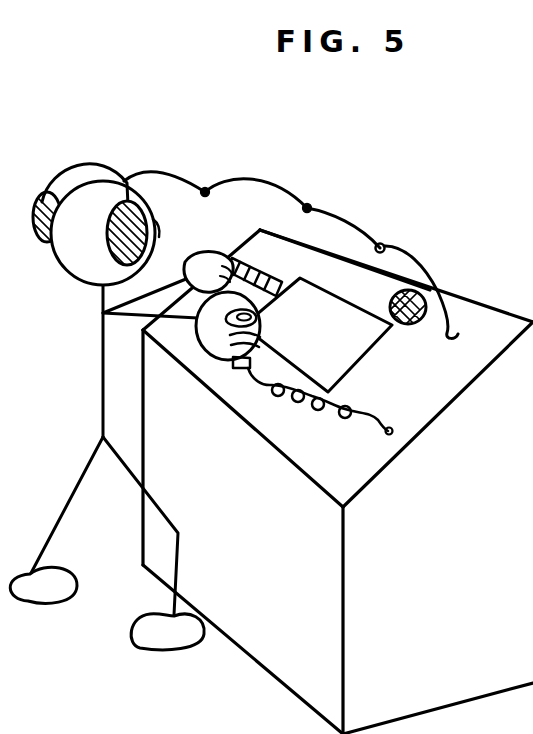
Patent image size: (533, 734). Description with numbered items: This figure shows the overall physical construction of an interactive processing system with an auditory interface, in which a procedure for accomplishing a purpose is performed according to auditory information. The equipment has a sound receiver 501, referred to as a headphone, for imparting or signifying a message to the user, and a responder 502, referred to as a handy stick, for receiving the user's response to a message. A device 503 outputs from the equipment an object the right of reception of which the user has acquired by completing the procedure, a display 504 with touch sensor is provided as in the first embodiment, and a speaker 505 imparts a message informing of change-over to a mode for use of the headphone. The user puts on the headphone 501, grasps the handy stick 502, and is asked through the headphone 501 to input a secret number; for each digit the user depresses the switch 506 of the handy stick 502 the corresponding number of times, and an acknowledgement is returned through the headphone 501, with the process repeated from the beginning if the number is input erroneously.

The sound receiver 501 is at (100, 164).
The responder 502 is at (246, 369).
The device for outputting an object 503 is at (266, 280).
The display with touch sensor 504 is at (367, 352).
The speaker 505 is at (437, 293).
The switch 506 is at (258, 316).